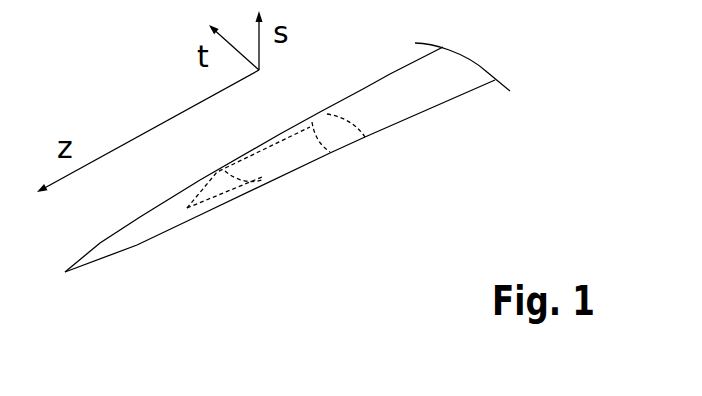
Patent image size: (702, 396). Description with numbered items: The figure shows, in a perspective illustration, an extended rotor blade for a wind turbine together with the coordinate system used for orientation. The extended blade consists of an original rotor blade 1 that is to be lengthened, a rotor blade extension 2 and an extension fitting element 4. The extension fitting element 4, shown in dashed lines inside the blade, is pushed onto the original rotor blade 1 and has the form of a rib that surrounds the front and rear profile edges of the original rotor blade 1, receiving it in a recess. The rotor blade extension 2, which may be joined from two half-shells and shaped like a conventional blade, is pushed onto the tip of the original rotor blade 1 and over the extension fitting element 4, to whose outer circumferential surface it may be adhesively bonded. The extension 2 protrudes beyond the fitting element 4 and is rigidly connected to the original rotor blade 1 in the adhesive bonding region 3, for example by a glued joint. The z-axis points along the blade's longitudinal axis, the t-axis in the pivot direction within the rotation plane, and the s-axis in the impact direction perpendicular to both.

The original rotor blade 1 is at (363, 89).
The rotor blade extension 2 is at (140, 215).
The adhesive bonding region 3 is at (312, 123).
The extension fitting element 4 is at (225, 172).